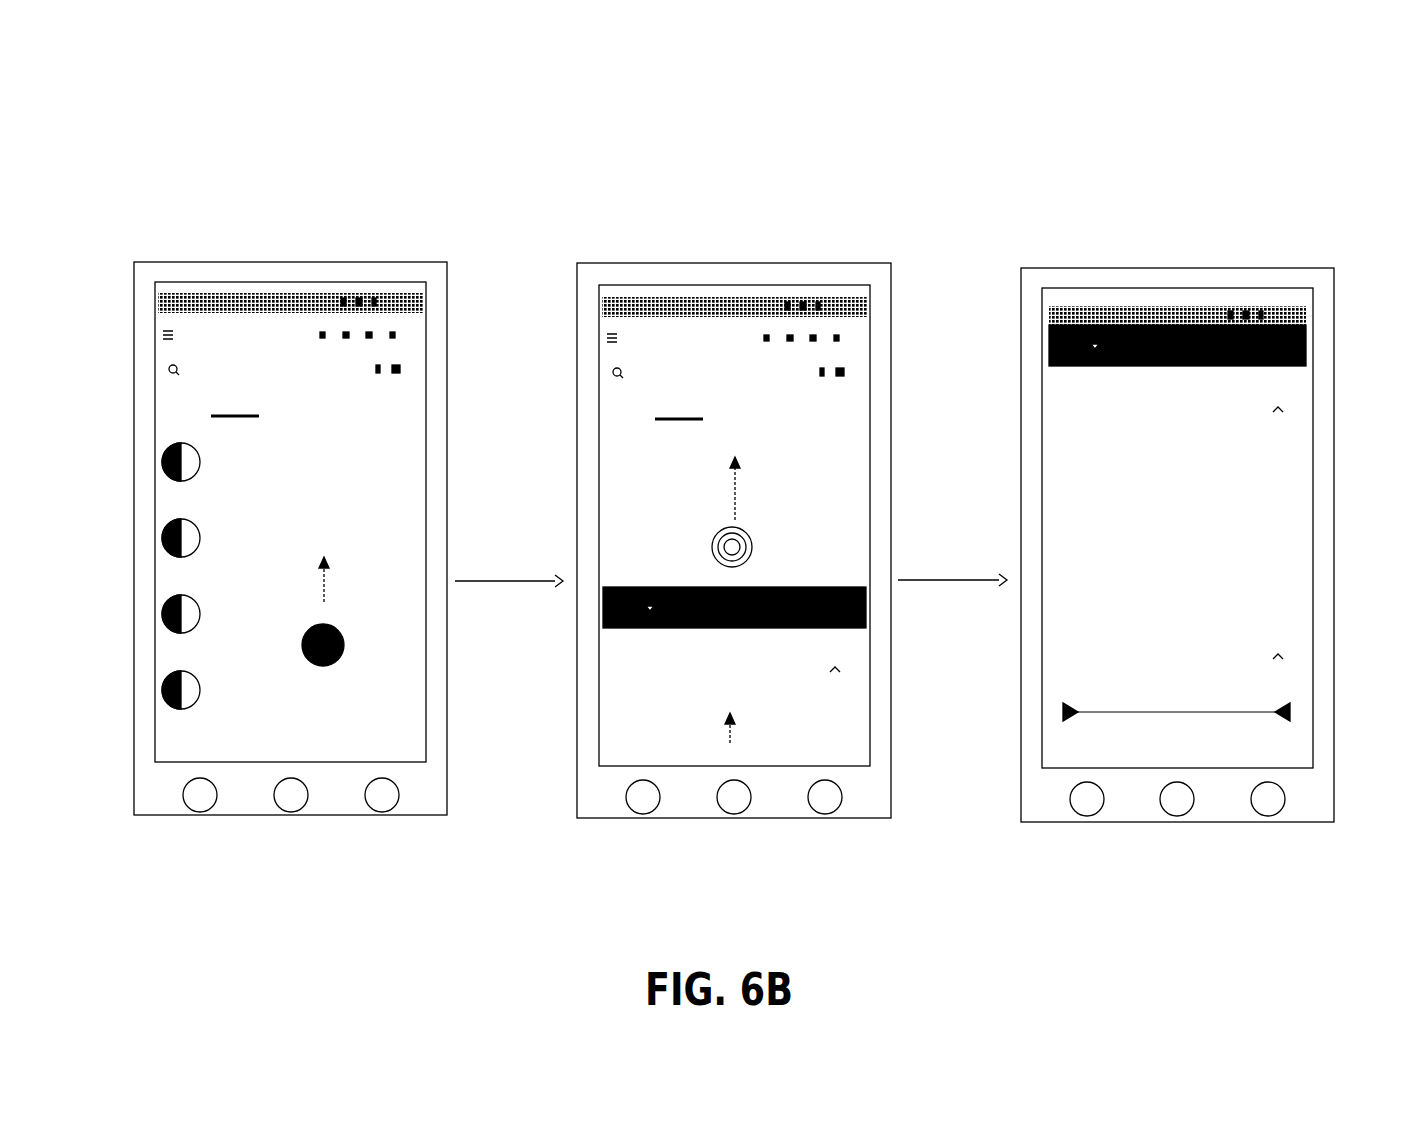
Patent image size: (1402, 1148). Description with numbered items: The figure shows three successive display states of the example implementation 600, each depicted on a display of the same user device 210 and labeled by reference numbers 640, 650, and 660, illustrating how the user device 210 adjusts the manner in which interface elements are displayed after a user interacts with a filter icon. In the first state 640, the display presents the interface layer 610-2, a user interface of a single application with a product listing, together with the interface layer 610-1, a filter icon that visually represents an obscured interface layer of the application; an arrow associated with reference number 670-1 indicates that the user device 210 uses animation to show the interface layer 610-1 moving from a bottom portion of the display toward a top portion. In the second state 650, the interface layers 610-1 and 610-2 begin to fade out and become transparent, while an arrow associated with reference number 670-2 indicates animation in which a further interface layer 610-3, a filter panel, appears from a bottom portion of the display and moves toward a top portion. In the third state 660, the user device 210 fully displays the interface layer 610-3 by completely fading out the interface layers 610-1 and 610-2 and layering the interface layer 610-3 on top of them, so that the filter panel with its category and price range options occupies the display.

The example implementation 600 is at (236, 148).
The user device 210 is at (370, 854).
The first display state 640 is at (274, 262).
The second display state 650 is at (729, 263).
The third display state 660 is at (1176, 268).
The interface layer 610-1 is at (440, 656).
The interface layer 610-2 is at (510, 457).
The interface layer 610-3 is at (954, 719).
The animation of interface layer moving upward 670-1 is at (422, 609).
The animation of interface layer appearing 670-2 is at (829, 754).